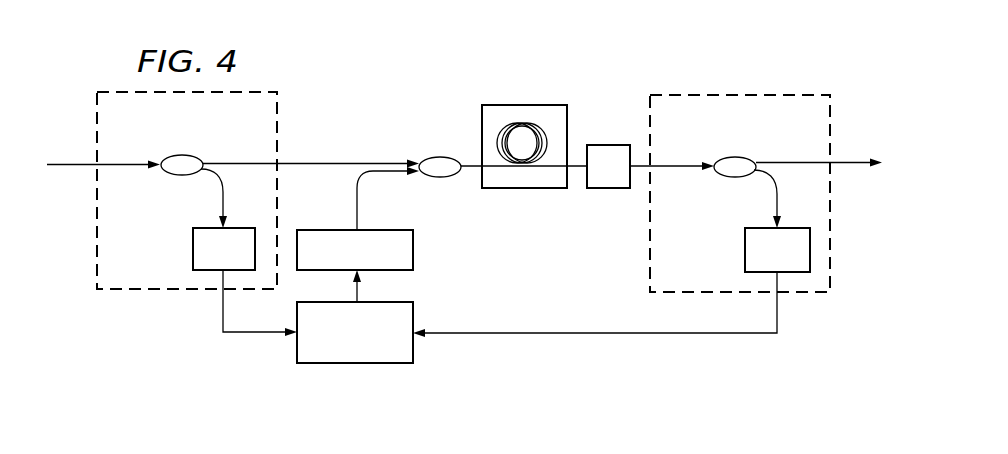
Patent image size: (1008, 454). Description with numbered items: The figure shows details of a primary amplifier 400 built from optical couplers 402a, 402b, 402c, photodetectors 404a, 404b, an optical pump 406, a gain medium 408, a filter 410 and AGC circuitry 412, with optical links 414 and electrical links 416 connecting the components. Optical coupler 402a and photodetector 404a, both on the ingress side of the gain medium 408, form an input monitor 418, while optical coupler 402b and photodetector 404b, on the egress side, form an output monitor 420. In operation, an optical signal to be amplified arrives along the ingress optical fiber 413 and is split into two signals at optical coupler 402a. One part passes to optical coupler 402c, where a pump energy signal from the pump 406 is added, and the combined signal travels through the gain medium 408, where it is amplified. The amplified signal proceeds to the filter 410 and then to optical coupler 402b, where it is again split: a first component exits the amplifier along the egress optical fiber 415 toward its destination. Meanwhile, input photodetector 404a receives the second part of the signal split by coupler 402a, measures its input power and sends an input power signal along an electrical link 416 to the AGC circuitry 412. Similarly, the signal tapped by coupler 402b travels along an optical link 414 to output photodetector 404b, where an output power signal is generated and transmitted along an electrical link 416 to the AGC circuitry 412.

The primary amplifier 400 is at (620, 65).
The optical coupler 402a is at (182, 155).
The optical coupler 402b is at (733, 157).
The optical coupler 402c is at (438, 157).
The input photodetector 404a is at (193, 250).
The output photodetector 404b is at (745, 250).
The optical pump 406 is at (413, 250).
The gain medium 408 is at (523, 104).
The filter 410 is at (608, 145).
The AGC circuitry 412 is at (413, 348).
The ingress optical fiber 413 is at (75, 162).
The optical link 414 is at (219, 198).
The egress optical fiber 415 is at (850, 160).
The electrical link 416 is at (255, 336).
The input monitor 418 is at (134, 299).
The output monitor 420 is at (793, 301).